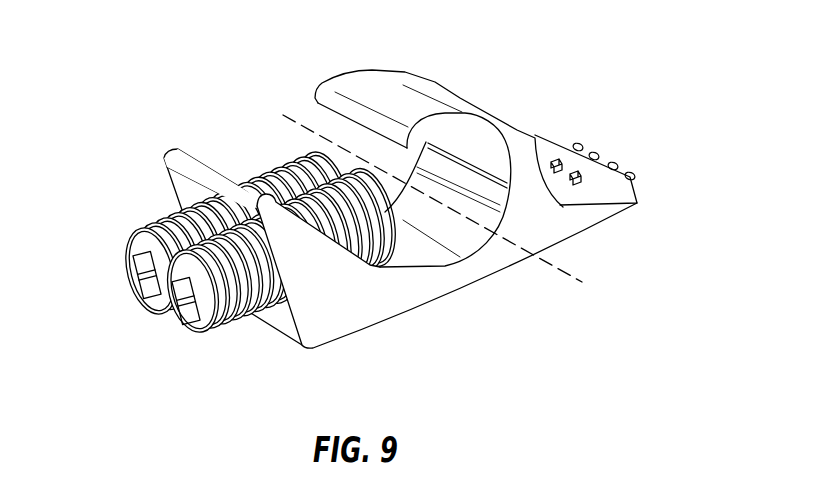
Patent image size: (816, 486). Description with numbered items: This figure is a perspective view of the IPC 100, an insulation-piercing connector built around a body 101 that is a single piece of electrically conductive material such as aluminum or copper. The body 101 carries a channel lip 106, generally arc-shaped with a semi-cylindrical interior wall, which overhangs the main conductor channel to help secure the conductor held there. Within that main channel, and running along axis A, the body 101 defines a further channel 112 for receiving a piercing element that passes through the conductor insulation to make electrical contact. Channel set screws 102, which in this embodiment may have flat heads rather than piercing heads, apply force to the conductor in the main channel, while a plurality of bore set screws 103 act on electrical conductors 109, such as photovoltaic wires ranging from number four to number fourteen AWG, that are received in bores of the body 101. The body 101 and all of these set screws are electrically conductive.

The IPC 100 is at (338, 41).
The body 101 is at (587, 215).
The channel set screw 102 is at (203, 288).
The bore set screws 103 is at (577, 170).
The channel lip 106 is at (348, 98).
The electrical conductor 109 is at (640, 175).
The channel 112 is at (467, 167).